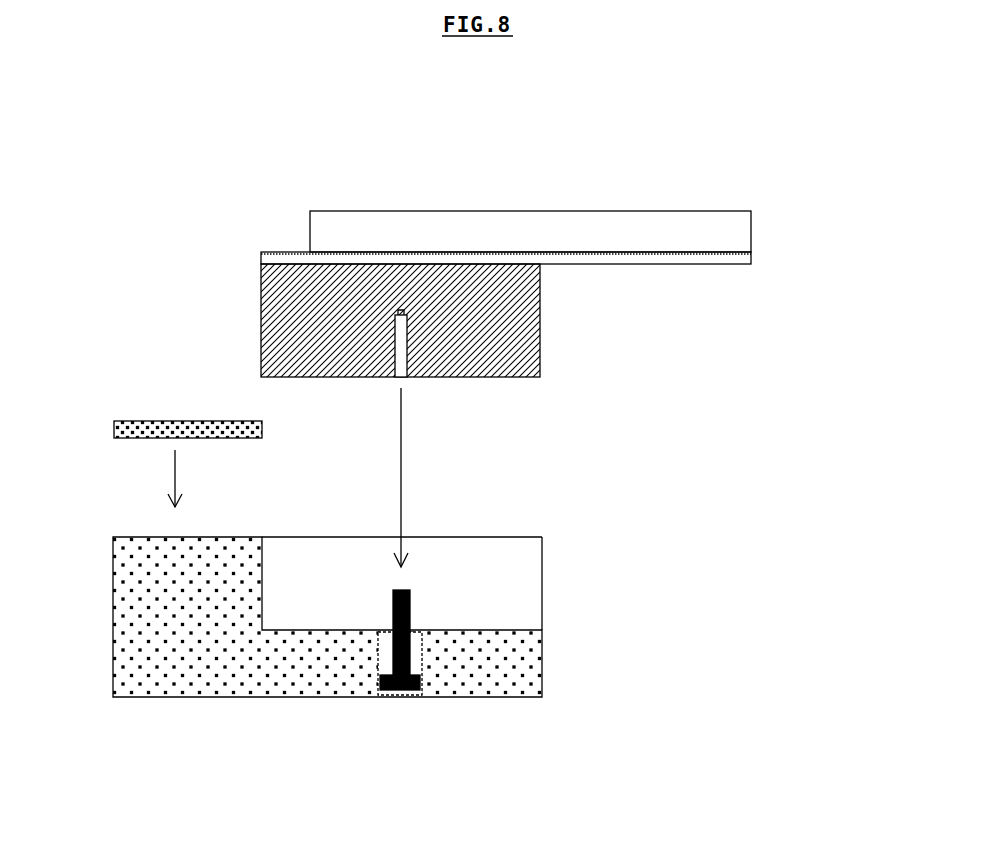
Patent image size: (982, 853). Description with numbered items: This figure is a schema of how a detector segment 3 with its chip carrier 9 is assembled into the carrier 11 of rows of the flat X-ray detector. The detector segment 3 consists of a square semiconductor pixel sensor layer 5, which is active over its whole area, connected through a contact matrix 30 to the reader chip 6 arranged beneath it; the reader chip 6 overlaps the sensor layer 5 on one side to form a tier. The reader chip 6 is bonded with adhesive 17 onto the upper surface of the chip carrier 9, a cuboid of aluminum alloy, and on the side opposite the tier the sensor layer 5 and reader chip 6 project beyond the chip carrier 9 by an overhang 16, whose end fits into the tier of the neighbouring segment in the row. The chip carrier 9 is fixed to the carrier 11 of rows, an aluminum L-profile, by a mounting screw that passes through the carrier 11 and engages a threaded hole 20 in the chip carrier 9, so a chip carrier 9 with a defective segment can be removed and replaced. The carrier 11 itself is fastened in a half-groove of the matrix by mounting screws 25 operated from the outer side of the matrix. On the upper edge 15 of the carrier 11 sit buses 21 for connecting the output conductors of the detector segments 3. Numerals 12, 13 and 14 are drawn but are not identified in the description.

The detector segment 3 is at (672, 186).
The sensor layer 5 is at (570, 230).
The reader chip 6 is at (708, 266).
The chip carrier 9 is at (510, 355).
The carrier of rows 11 is at (125, 663).
The hatched block side 12 is at (540, 305).
The base mold side 13 is at (542, 662).
The film 14 is at (260, 263).
The upper edge 15 is at (262, 537).
The overhang 16 is at (676, 270).
The adhesive 17 is at (287, 278).
The threaded hole 20 is at (400, 373).
The bus 21 is at (125, 430).
The mounting screw 25 is at (390, 650).
The contact matrix 30 is at (751, 252).